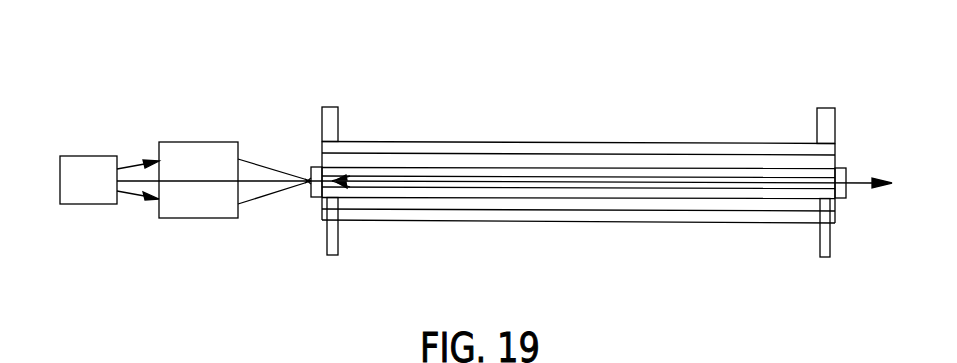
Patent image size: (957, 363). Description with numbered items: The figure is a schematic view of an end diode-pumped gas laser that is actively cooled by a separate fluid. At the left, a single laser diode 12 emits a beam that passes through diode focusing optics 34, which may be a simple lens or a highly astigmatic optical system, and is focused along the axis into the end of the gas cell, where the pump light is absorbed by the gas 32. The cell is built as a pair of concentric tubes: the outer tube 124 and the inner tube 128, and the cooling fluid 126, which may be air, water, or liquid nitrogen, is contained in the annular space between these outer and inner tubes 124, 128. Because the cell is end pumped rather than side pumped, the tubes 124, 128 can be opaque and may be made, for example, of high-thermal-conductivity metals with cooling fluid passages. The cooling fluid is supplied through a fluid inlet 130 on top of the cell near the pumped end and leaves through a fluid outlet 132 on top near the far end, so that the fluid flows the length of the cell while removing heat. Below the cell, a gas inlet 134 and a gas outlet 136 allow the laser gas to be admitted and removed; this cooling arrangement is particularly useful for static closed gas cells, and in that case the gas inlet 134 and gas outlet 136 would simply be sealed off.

The laser diode 12 is at (87, 156).
The diode focusing optics 34 is at (197, 142).
The gas 32 is at (490, 181).
The outer tube 124 is at (557, 222).
The cooling fluid 126 is at (713, 205).
The inner tube 128 is at (713, 177).
The fluid inlet 130 is at (333, 107).
The fluid outlet 132 is at (828, 108).
The gas inlet 134 is at (333, 257).
The gas outlet 136 is at (825, 260).